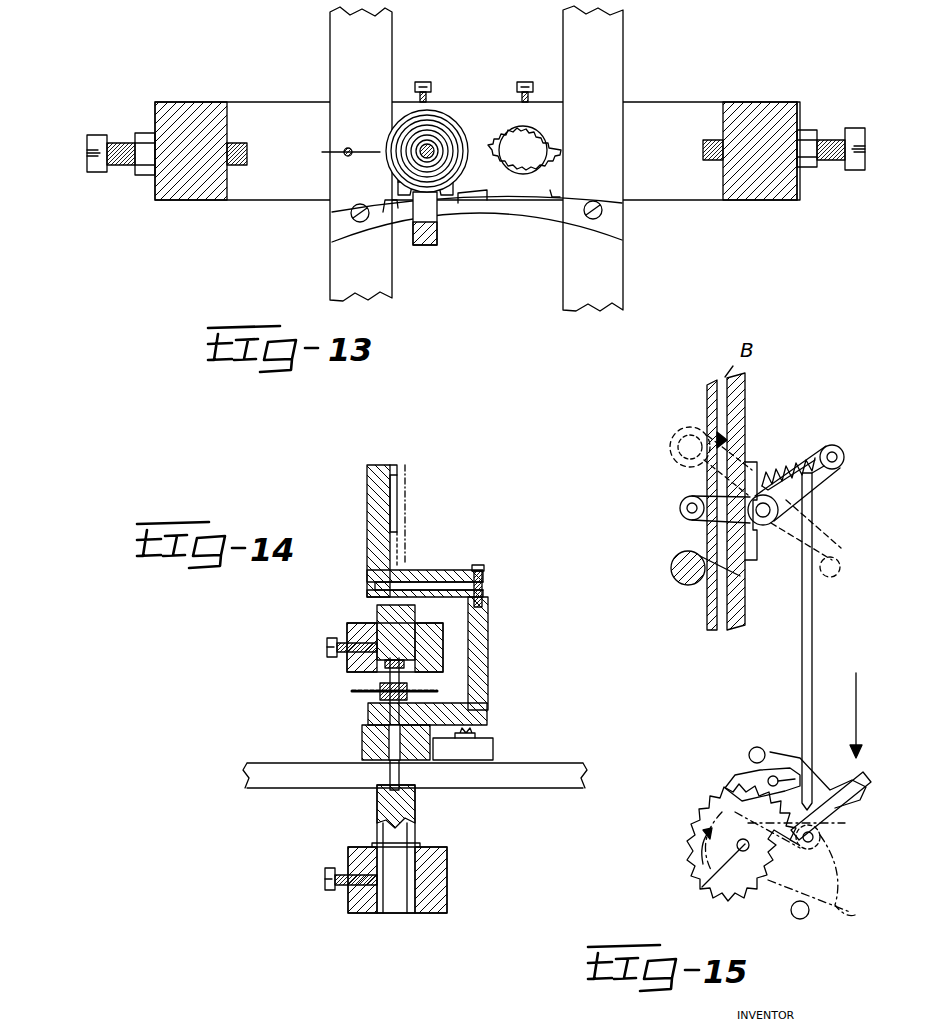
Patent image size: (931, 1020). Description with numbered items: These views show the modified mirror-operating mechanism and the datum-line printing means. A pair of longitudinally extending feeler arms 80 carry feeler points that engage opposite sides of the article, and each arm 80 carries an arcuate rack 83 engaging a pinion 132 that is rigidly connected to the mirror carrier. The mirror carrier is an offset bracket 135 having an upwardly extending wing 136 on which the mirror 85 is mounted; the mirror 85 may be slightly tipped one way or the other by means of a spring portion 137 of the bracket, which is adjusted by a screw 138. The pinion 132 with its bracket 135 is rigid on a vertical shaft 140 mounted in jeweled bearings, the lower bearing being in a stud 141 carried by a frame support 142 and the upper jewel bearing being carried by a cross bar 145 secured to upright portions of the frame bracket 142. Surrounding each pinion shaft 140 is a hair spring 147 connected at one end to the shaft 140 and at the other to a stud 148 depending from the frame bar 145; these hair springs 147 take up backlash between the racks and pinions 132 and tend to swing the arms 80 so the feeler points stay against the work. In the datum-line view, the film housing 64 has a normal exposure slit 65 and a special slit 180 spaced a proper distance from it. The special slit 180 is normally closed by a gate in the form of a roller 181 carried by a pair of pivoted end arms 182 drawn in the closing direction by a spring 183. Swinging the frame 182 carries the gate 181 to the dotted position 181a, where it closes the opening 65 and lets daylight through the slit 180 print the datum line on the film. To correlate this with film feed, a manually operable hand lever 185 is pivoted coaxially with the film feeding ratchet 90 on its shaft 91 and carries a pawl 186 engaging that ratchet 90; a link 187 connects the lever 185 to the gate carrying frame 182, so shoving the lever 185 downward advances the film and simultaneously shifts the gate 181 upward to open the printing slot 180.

In FIG. 13, the feeler arm 80 is at (334, 67).
In FIG. 14, the feeler arm 80 is at (560, 771).
In FIG. 13, the arcuate rack 83 is at (453, 198).
In FIG. 14, the arcuate rack 83 is at (479, 746).
In FIG. 14, the mirror 85 is at (393, 502).
In FIG. 13, the pinion 132 is at (513, 117).
In FIG. 14, the pinion 132 is at (362, 741).
In FIG. 13, the offset bracket 135 is at (423, 248).
In FIG. 14, the offset bracket 135 is at (481, 650).
In FIG. 14, the upwardly extending wing 136 is at (367, 522).
In FIG. 14, the spring portion 137 is at (375, 585).
In FIG. 14, the screw 138 is at (479, 581).
In FIG. 13, the vertical shaft 140 is at (421, 147).
In FIG. 14, the vertical shaft 140 is at (390, 688).
In FIG. 14, the stud 141 is at (377, 611).
In FIG. 13, the frame support 142 is at (215, 134).
In FIG. 14, the frame support 142 is at (433, 873).
In FIG. 14, the cross bar 145 is at (357, 630).
In FIG. 13, the hair spring 147 is at (450, 126).
In FIG. 14, the hair spring 147 is at (353, 694).
In FIG. 13, the stud 148 is at (343, 158).
In FIG. 15, the film housing 64 is at (707, 392).
In FIG. 15, the slit 65 is at (733, 443).
In FIG. 15, the special slit 180 is at (744, 572).
In FIG. 15, the roller gate 181 is at (671, 573).
In FIG. 15, the dotted position of gate 181a is at (682, 437).
In FIG. 15, the pivoted end arms 182 is at (818, 473).
In FIG. 15, the spring 183 is at (809, 459).
In FIG. 15, the hand lever 185 is at (843, 805).
In FIG. 15, the pawl 186 is at (735, 785).
In FIG. 15, the link 187 is at (812, 635).
In FIG. 15, the film feeding ratchet wheel 90 is at (702, 818).
In FIG. 15, the shaft 91 is at (715, 868).